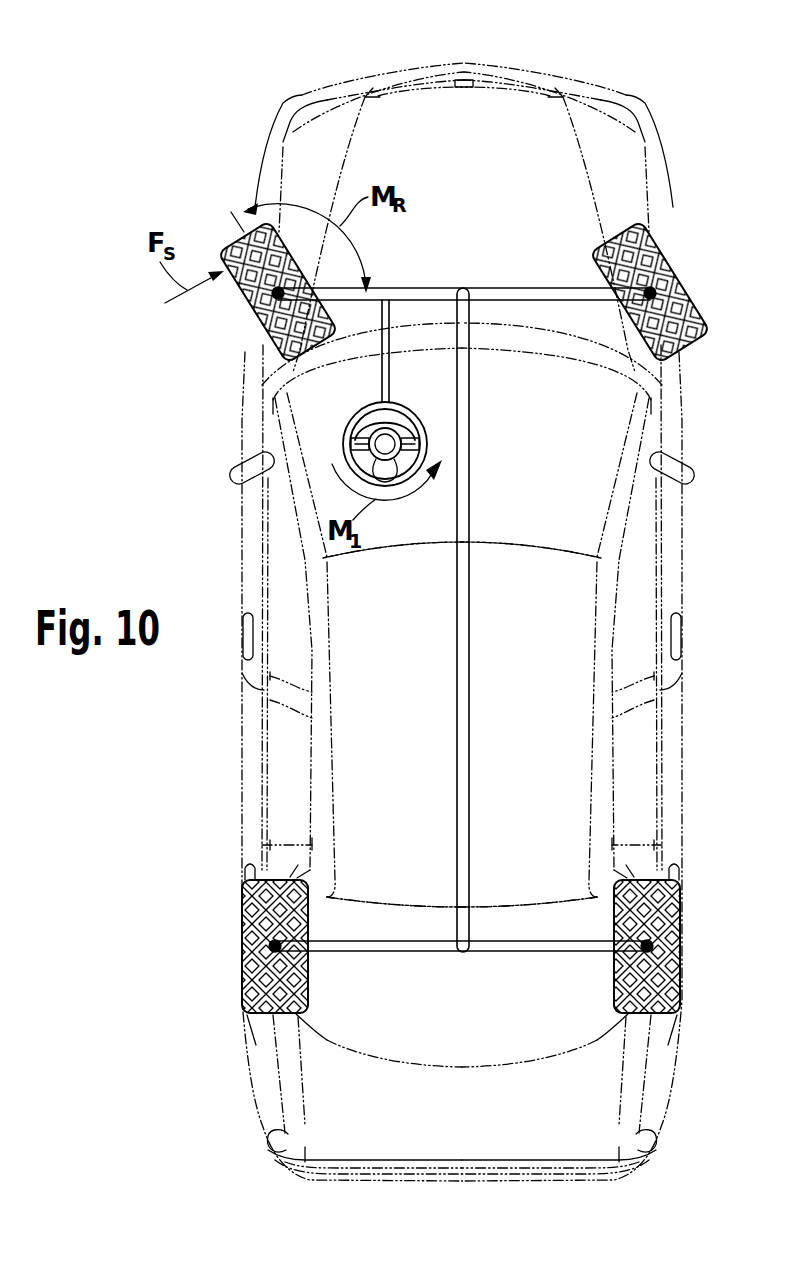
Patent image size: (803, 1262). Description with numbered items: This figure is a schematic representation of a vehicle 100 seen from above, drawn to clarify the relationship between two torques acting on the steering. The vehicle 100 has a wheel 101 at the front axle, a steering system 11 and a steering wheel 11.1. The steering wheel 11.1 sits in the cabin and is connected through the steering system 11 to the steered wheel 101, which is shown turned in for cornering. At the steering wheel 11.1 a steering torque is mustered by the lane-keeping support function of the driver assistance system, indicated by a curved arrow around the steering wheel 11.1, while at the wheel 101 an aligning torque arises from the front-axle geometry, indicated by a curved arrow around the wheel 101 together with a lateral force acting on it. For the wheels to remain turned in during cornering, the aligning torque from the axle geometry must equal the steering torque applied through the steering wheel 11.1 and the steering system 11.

The vehicle 100 is at (320, 82).
The wheel 101 is at (246, 236).
The steering system 11 is at (498, 292).
The steering wheel 11.1 is at (419, 411).